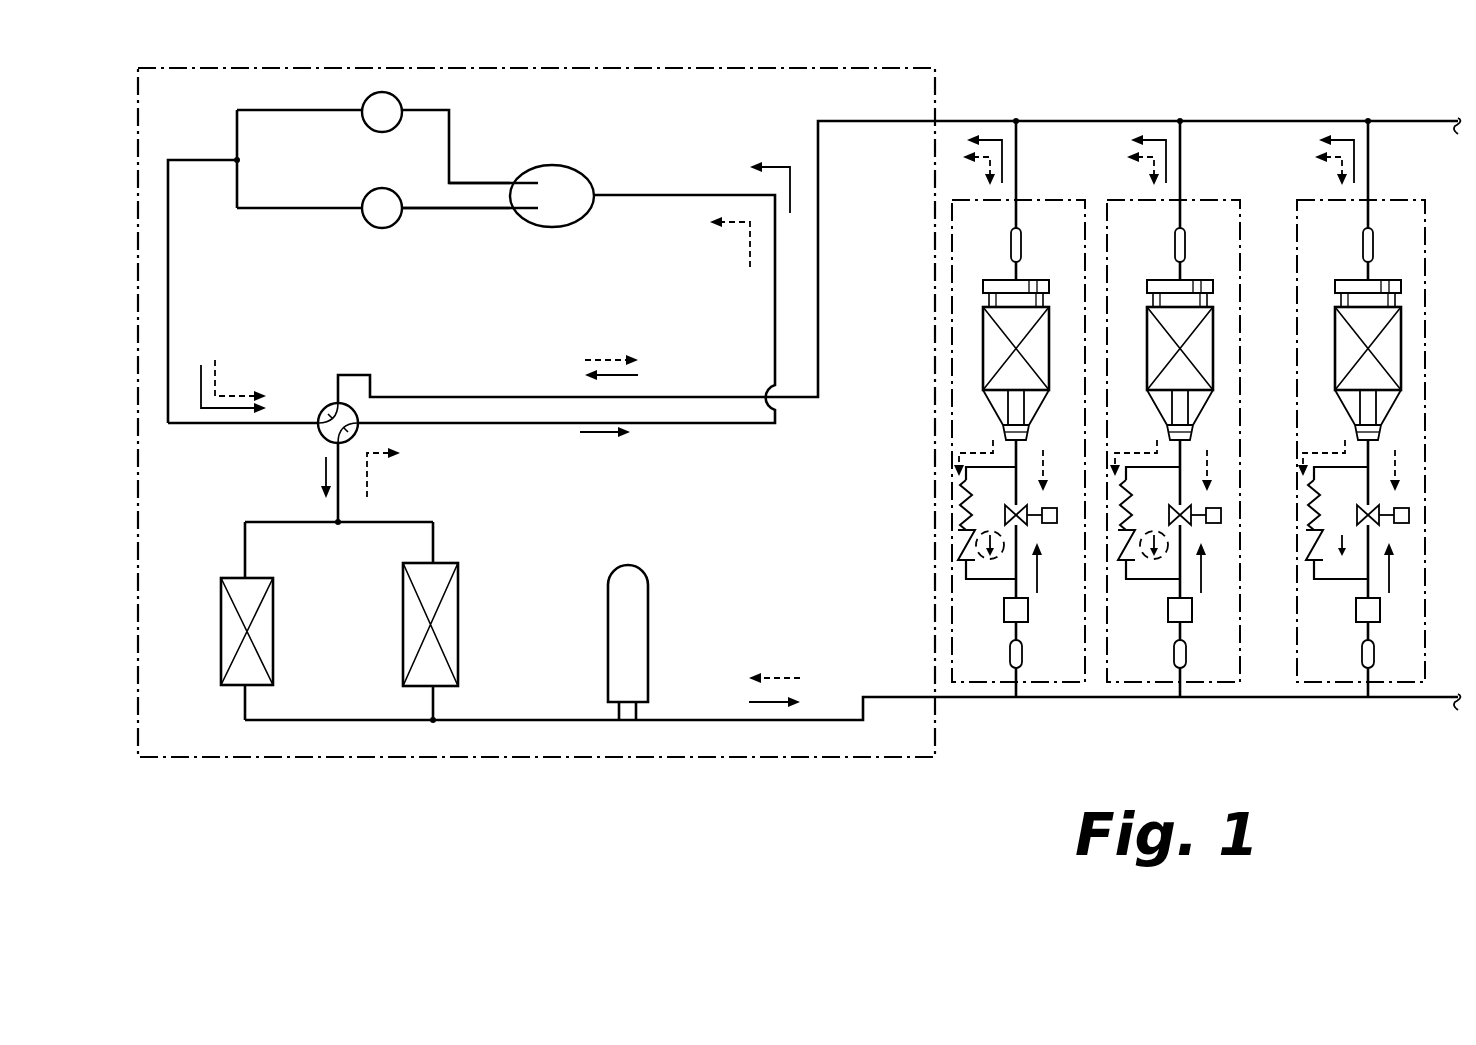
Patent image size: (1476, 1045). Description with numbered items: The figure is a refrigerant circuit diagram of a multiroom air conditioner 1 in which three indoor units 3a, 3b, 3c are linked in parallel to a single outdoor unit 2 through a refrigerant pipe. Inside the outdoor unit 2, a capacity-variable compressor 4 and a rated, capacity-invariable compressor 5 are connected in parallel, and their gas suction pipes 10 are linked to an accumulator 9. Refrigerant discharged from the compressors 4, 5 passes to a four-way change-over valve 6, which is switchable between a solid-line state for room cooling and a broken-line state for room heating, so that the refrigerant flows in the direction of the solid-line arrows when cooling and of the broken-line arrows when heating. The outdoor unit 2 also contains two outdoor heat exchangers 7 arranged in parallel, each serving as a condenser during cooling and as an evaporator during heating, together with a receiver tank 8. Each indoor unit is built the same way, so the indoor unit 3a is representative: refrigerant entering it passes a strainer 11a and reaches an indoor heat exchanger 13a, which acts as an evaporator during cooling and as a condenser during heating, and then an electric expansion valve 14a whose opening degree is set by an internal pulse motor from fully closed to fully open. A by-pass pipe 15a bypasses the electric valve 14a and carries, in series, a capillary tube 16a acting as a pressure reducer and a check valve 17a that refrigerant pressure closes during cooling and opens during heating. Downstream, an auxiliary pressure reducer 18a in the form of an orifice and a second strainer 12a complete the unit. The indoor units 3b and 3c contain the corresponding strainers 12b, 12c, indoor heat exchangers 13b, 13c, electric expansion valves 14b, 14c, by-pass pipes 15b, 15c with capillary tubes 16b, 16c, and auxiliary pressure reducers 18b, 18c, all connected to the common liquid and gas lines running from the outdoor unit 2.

The multiroom air conditioner 1 is at (942, 78).
The outdoor unit 2 is at (316, 762).
The indoor unit 3a is at (1032, 200).
The indoor unit 3b is at (1196, 200).
The indoor unit 3c is at (1380, 200).
The capacity-variable compressor 4 is at (372, 122).
The rated compressor 5 is at (370, 216).
The four-way change-over valve 6 is at (328, 404).
The outdoor heat exchanger 7 is at (218, 608).
The receiver tank 8 is at (608, 620).
The accumulator 9 is at (570, 207).
The gas suction pipe 10 is at (482, 183).
The strainer 11a is at (1010, 246).
The strainer 12a is at (1008, 656).
The strainer 12b is at (1155, 702).
The strainer 12c is at (1339, 693).
The indoor heat exchanger 13a is at (1036, 282).
The indoor heat exchanger 13b is at (1199, 297).
The indoor heat exchanger 13c is at (1391, 297).
The electric expansion valve 14a is at (1057, 524).
The electric expansion valve 14b is at (1205, 576).
The electric expansion valve 14c is at (1392, 576).
The by-pass pipe 15a is at (966, 580).
The by-pass pipe 15b is at (1145, 493).
The by-pass pipe 15c is at (1335, 493).
The capillary tube 16a is at (960, 498).
The capillary tube 16b is at (1151, 505).
The capillary tube 16c is at (1338, 505).
The check valve 17a is at (958, 548).
The auxiliary pressure reducer 18a is at (1004, 611).
The auxiliary pressure reducer 18b is at (1149, 624).
The auxiliary pressure reducer 18c is at (1341, 626).